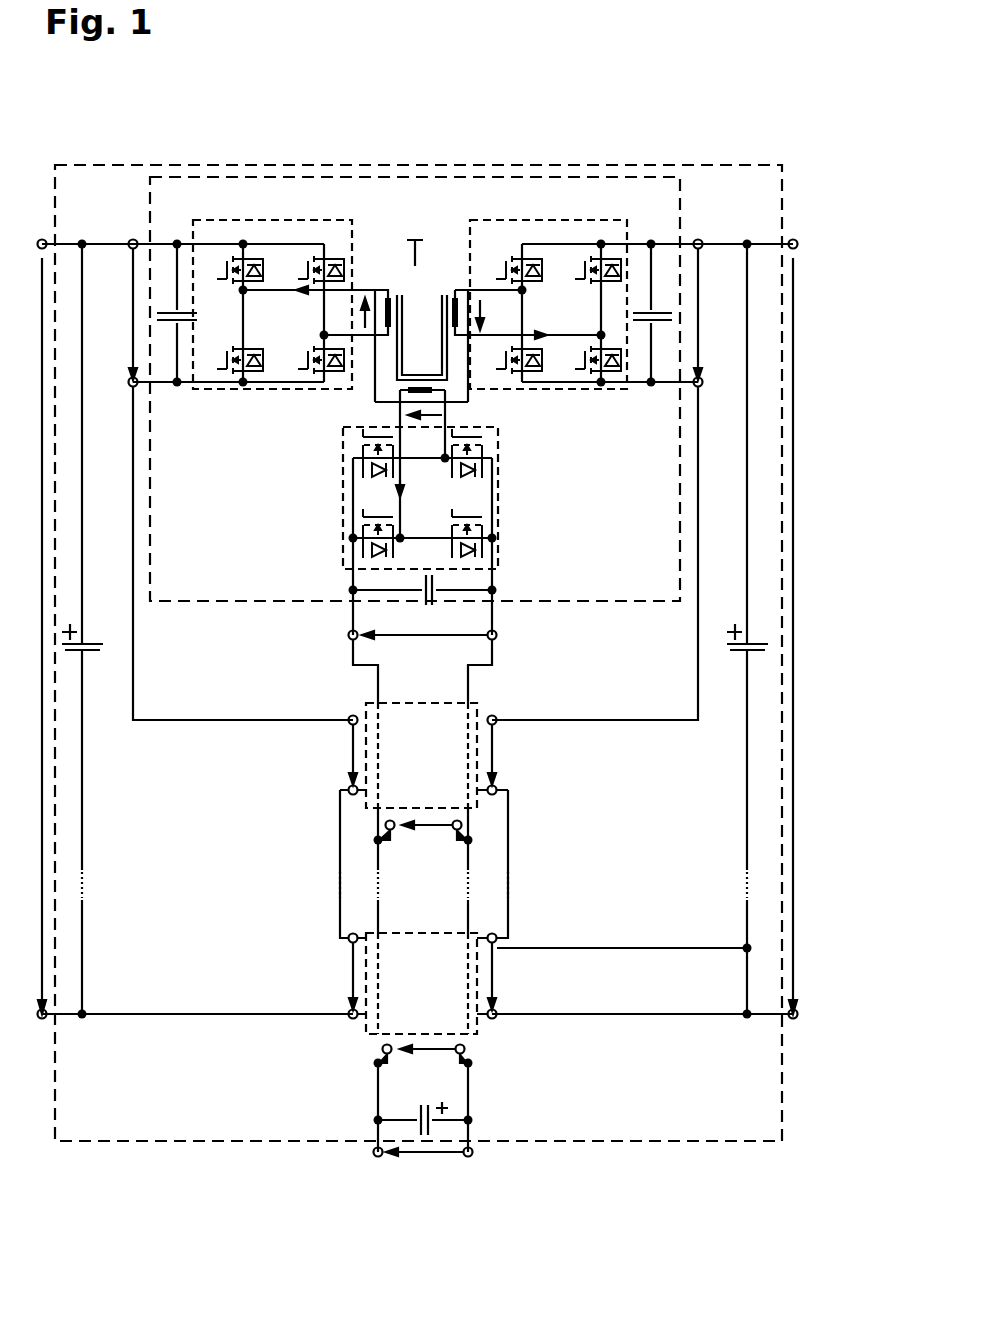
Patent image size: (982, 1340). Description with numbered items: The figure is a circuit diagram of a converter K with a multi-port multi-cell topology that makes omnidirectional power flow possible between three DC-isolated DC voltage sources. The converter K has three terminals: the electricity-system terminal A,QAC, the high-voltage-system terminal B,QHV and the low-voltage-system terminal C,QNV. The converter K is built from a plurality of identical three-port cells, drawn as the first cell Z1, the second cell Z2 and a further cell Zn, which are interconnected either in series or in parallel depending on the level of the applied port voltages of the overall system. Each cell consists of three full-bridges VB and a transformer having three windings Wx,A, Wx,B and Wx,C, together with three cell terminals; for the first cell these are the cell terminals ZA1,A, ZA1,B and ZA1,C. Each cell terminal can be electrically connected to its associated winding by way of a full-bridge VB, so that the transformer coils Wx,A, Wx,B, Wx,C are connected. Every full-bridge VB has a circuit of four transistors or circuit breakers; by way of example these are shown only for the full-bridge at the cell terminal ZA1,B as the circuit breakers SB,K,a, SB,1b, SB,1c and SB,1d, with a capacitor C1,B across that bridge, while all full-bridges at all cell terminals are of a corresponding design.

The converter K is at (214, 165).
The first converter cell Z1 is at (681, 208).
The second converter cell Z2 is at (480, 806).
The n-th converter cell Zn is at (480, 1032).
The full-bridge VB is at (275, 219).
The cell terminal A of first cell ZA1,A is at (133, 312).
The cell terminal B of first cell ZA1,B is at (702, 302).
The cell terminal C of first cell ZA1,C is at (458, 612).
The transformer winding A Wx,A is at (383, 287).
The transformer winding B Wx,B is at (463, 287).
The transformer winding C Wx,C is at (430, 392).
The circuit breaker a of full-bridge B SB,K,a is at (512, 258).
The circuit breaker b of full-bridge B SB,1b is at (538, 345).
The circuit breaker c of full-bridge B SB,1c is at (593, 256).
The circuit breaker d of full-bridge B SB,1d is at (618, 345).
The capacitor at cell terminal B C1,B is at (655, 295).
The terminal A with electricity system A,QAC is at (43, 783).
The terminal B with high-voltage system B,QHV is at (793, 855).
The terminal C with low-voltage system C,QNV is at (422, 1170).